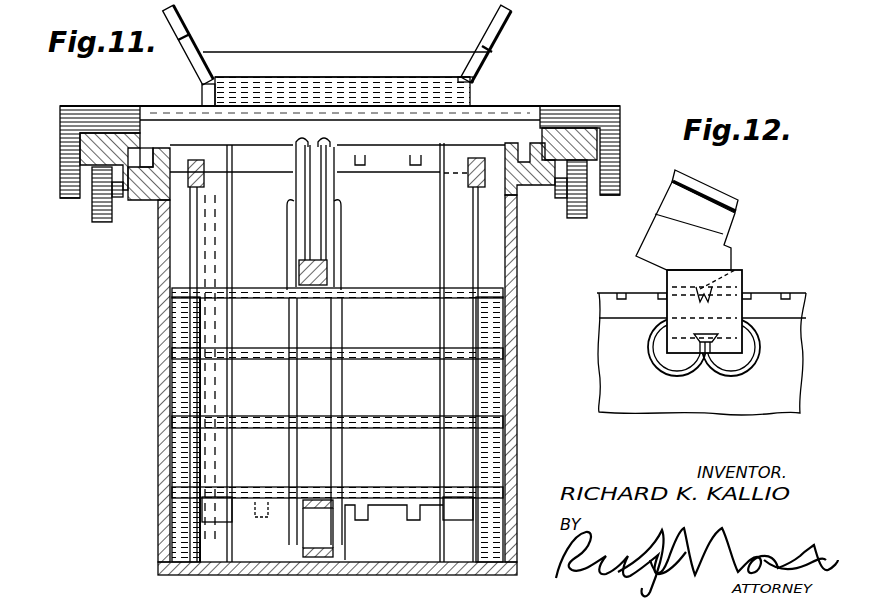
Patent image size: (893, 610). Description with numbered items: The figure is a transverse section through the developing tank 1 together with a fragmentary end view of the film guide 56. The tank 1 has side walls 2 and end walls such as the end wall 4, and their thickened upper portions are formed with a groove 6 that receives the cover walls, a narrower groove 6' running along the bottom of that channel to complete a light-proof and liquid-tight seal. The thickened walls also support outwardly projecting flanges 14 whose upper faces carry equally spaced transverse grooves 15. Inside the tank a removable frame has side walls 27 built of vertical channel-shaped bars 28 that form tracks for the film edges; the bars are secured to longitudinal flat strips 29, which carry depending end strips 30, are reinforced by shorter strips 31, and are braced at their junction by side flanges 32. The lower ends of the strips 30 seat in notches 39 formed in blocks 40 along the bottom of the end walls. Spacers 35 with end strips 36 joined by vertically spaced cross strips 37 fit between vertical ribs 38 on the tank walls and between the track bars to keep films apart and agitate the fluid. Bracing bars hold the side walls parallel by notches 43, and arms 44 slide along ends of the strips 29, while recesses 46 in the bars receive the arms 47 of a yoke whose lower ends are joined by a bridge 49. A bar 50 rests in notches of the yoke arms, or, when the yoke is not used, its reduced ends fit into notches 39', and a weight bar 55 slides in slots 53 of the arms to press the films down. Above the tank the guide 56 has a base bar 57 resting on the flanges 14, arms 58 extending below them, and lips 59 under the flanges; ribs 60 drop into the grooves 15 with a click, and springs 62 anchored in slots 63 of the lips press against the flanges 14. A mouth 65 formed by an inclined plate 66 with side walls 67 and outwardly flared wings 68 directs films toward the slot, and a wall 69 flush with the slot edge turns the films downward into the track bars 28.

In FIG. 11, the tank 1 is at (525, 300).
In FIG. 11, the side walls 2 is at (158, 278).
In FIG. 12, the side walls 2 is at (620, 354).
In FIG. 12, the end wall 4 is at (636, 310).
In FIG. 11, the groove 6 is at (347, 121).
In FIG. 11, the groove 6' is at (141, 220).
In FIG. 11, the flanges 14 is at (113, 140).
In FIG. 12, the grooves 15 is at (622, 293).
In FIG. 11, the side walls of frame 27 is at (196, 160).
In FIG. 11, the bars 28 is at (234, 188).
In FIG. 11, the flat strips 29 is at (205, 163).
In FIG. 11, the depending strips 30 is at (200, 246).
In FIG. 11, the strips 31 is at (198, 192).
In FIG. 11, the side flanges 32 is at (213, 170).
In FIG. 11, the spacers 35 is at (476, 374).
In FIG. 11, the end strips 36 is at (178, 312).
In FIG. 11, the shelf 37 is at (376, 348).
In FIG. 11, the ribs 38 is at (158, 408).
In FIG. 11, the notches 39 is at (409, 545).
In FIG. 11, the notches 39' is at (240, 528).
In FIG. 11, the blocks 40 is at (238, 562).
In FIG. 11, the notches 43 is at (402, 176).
In FIG. 11, the arms 44 is at (395, 150).
In FIG. 11, the recesses 46 is at (340, 140).
In FIG. 11, the arms of yoke 47 is at (340, 250).
In FIG. 11, the bridge 49 is at (306, 560).
In FIG. 11, the bar 50 is at (318, 528).
In FIG. 11, the slots 53 is at (308, 208).
In FIG. 11, the bar 55 is at (298, 270).
In FIG. 11, the guide 56 is at (498, 101).
In FIG. 11, the bar 57 is at (558, 118).
In FIG. 11, the arms 58 is at (60, 160).
In FIG. 11, the lips 59 is at (90, 198).
In FIG. 11, the ribs 60 is at (90, 132).
In FIG. 12, the ribs 60 is at (748, 265).
In FIG. 11, the springs 62 is at (104, 222).
In FIG. 12, the springs 62 is at (750, 337).
In FIG. 12, the slot 63 is at (703, 356).
In FIG. 11, the mouth 65 is at (168, 48).
In FIG. 12, the mouth 65 is at (720, 254).
In FIG. 11, the plate 66 is at (460, 67).
In FIG. 12, the side walls 67 is at (690, 248).
In FIG. 11, the wings 68 is at (154, 25).
In FIG. 12, the wings 68 is at (708, 208).
In FIG. 11, the wall 69 is at (350, 78).
In FIG. 12, the wall 69 is at (730, 267).